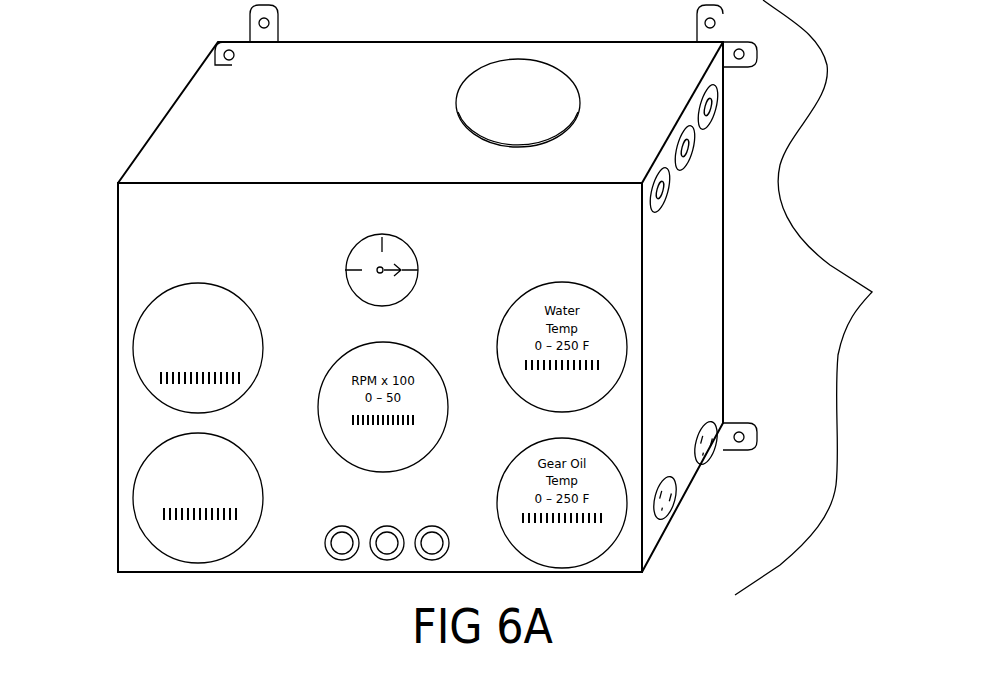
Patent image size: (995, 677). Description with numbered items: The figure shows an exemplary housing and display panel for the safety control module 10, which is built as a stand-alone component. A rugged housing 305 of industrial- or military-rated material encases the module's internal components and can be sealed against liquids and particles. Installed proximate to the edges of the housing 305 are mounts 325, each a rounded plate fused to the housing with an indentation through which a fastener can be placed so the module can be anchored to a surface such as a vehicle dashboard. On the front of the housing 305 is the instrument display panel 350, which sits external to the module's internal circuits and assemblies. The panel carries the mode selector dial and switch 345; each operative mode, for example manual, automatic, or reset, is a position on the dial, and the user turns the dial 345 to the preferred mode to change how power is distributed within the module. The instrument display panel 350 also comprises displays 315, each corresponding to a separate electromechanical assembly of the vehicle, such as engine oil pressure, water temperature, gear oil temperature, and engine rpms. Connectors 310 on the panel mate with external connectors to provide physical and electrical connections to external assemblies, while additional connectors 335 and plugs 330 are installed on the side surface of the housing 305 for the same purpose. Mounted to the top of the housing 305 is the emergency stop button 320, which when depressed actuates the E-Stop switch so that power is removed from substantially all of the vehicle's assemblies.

The safety control module 10 is at (817, 297).
The housing 305 is at (228, 143).
The connectors 310 is at (448, 520).
The displays 315 is at (162, 332).
The emergency stop button 320 is at (496, 127).
The mounts 325 is at (752, 436).
The plugs 330 is at (715, 413).
The connectors 335 is at (716, 156).
The mode selector switch 345 is at (401, 255).
The instrument display panel 350 is at (147, 417).